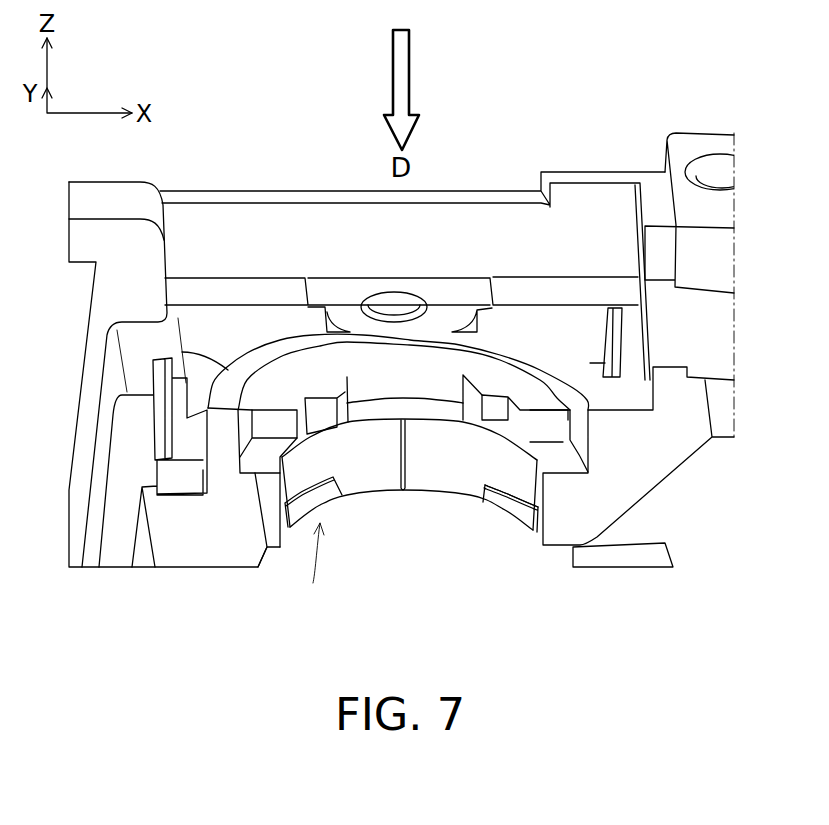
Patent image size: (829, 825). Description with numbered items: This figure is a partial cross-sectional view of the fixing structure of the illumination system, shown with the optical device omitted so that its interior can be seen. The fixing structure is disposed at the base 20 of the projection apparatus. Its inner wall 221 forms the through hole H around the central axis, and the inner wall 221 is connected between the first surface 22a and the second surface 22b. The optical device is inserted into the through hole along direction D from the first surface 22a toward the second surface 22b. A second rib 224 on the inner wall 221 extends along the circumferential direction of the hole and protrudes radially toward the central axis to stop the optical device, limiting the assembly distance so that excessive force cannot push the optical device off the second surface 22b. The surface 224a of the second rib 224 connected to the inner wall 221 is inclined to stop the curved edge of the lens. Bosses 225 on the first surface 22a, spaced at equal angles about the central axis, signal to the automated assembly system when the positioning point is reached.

The base 20 is at (388, 372).
The first surface 22a is at (268, 446).
The second surface 22b is at (268, 553).
The inner wall 221 is at (420, 514).
The second rib 224 is at (537, 532).
The surface 224a is at (508, 507).
The bosses 225 is at (482, 392).